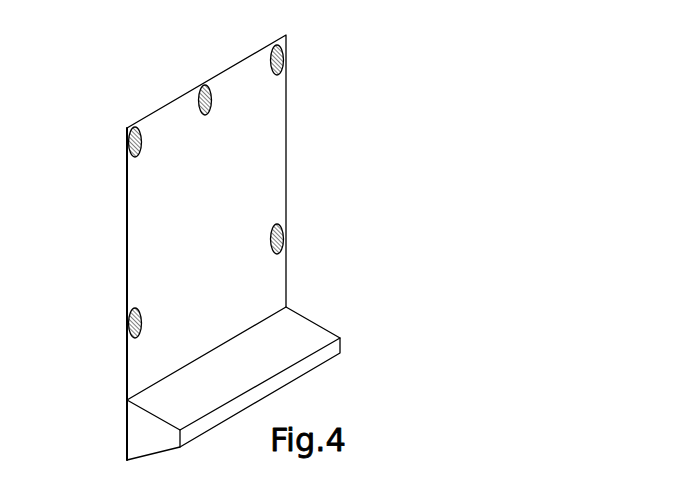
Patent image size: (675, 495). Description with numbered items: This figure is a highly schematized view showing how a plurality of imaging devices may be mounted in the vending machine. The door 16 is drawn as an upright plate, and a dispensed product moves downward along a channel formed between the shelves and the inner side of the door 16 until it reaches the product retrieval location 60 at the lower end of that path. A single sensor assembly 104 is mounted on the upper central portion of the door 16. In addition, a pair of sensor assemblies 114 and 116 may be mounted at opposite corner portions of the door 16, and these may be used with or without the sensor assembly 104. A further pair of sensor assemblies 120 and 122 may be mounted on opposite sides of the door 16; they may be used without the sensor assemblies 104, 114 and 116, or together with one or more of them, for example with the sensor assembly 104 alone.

The door 16 is at (287, 145).
The product retrieval location 60 is at (315, 335).
The sensor assembly 104 is at (203, 86).
The sensor assembly 114 is at (128, 148).
The sensor assembly 116 is at (283, 58).
The sensor assembly 120 is at (128, 329).
The sensor assembly 122 is at (284, 240).